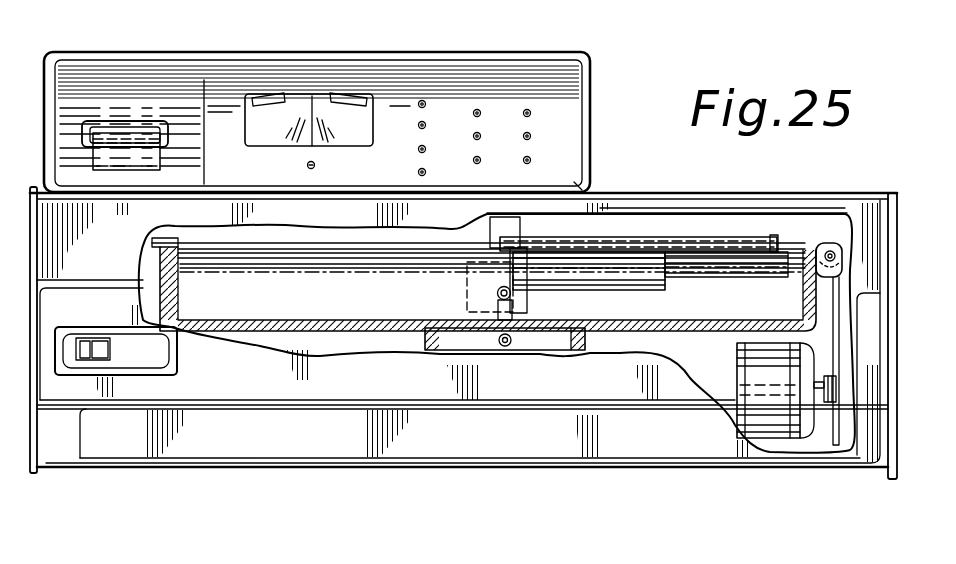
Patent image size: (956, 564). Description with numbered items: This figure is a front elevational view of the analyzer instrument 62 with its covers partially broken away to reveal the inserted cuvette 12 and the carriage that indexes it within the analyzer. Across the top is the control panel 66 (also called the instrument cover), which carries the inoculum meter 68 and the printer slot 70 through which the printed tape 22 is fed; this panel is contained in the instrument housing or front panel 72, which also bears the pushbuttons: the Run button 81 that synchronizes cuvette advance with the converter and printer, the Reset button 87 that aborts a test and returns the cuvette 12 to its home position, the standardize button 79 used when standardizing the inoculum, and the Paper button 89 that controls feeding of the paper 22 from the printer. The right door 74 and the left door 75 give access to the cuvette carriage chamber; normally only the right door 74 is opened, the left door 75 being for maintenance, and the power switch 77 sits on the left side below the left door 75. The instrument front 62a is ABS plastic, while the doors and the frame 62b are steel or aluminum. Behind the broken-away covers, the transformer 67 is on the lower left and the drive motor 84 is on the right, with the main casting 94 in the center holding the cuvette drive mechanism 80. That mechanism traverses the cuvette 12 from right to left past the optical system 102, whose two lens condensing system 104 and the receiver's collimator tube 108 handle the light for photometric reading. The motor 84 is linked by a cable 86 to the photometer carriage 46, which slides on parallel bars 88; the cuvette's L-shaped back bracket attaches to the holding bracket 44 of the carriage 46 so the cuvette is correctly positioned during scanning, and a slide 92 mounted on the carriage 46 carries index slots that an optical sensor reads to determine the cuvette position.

The cuvette 12 is at (490, 297).
The printed tape 22 is at (110, 160).
The holding bracket 44 is at (607, 277).
The photometer carriage 46 is at (680, 285).
The instrument 62 is at (636, 146).
The instrument front 62a is at (612, 443).
The frame 62b is at (882, 472).
The control panel 66 is at (182, 48).
The transformer 67 is at (315, 343).
The inoculum meter 68 is at (300, 113).
The printer slot 70 is at (152, 128).
The instrument housing 72 is at (551, 100).
The right door 74 is at (797, 207).
The left door 75 is at (45, 190).
The power switch 77 is at (157, 353).
The standardize button 79 is at (418, 150).
The cuvette drive mechanism 80 is at (838, 232).
The Run button 81 is at (418, 102).
The motor 84 is at (767, 371).
The cable 86 is at (305, 238).
The Reset button 87 is at (428, 125).
The parallel bars 88 is at (250, 262).
The Paper button 89 is at (418, 172).
The slide 92 is at (725, 236).
The main casting 94 is at (296, 326).
The optical system 102 is at (485, 310).
The two lens condensing system 104 is at (525, 332).
The collimator tube 108 is at (505, 347).